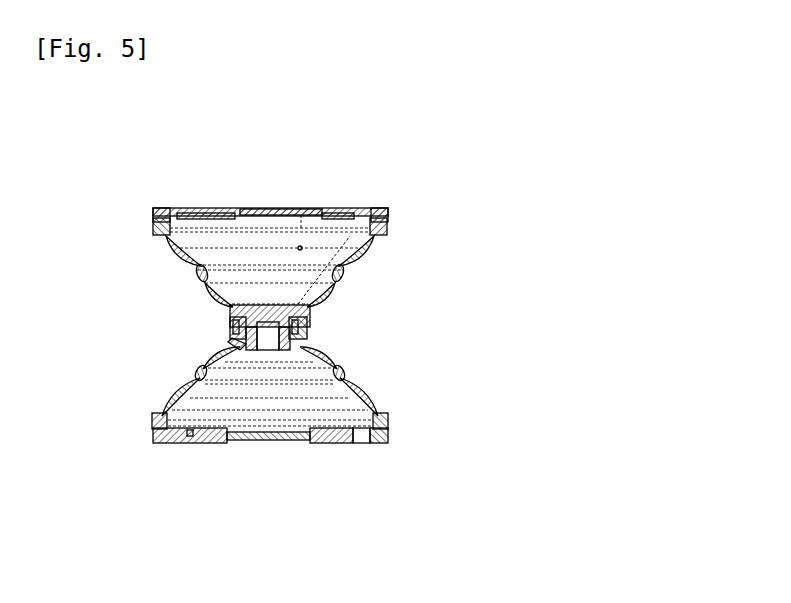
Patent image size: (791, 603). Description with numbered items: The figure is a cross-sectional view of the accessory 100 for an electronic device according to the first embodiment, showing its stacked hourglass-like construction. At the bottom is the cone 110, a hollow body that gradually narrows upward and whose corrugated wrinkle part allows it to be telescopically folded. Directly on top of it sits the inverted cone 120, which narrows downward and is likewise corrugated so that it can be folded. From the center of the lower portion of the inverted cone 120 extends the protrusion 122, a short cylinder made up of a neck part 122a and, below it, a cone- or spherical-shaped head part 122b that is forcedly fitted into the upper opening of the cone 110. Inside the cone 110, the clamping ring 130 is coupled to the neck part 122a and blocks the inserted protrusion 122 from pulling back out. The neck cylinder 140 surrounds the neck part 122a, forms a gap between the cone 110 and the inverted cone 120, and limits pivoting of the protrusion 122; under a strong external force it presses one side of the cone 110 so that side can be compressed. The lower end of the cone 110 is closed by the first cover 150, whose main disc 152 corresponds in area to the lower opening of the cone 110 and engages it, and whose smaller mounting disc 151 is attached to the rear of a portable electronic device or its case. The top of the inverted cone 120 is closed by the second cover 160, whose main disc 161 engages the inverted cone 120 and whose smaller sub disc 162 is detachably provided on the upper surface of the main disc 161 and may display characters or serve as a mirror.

The accessory for an electronic device 100 is at (167, 184).
The cone 110 is at (352, 380).
The inverted cone 120 is at (352, 256).
The protrusion 122 is at (100, 303).
The neck part 122a is at (248, 338).
The head part 122b is at (228, 321).
The clamping ring 130 is at (300, 334).
The neck cylinder 140 is at (315, 312).
The first cover 150 is at (405, 491).
The mounting disc 151 is at (330, 436).
The main disc 152 is at (378, 436).
The second cover 160 is at (410, 157).
The main disc 161 is at (385, 207).
The sub disc 162 is at (336, 212).